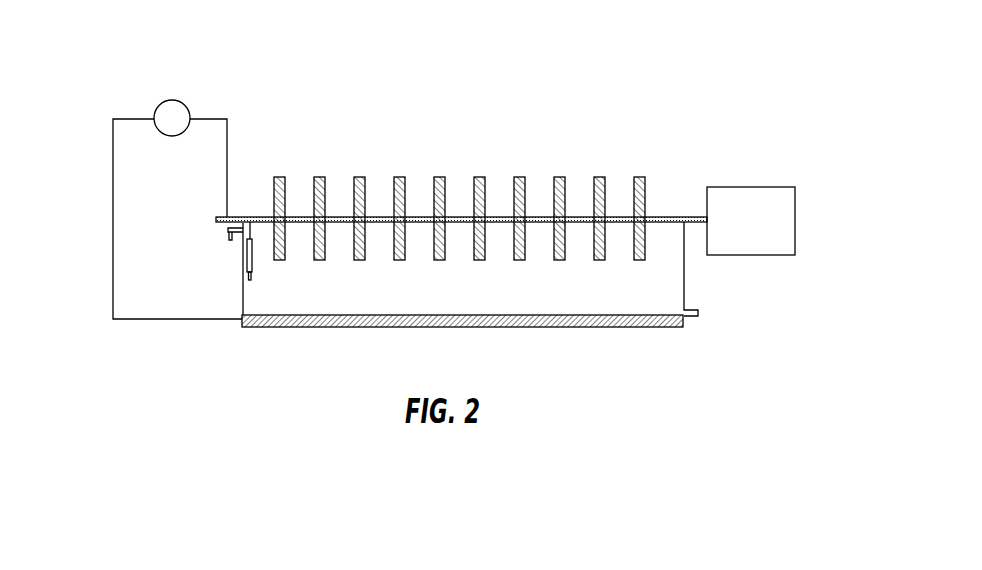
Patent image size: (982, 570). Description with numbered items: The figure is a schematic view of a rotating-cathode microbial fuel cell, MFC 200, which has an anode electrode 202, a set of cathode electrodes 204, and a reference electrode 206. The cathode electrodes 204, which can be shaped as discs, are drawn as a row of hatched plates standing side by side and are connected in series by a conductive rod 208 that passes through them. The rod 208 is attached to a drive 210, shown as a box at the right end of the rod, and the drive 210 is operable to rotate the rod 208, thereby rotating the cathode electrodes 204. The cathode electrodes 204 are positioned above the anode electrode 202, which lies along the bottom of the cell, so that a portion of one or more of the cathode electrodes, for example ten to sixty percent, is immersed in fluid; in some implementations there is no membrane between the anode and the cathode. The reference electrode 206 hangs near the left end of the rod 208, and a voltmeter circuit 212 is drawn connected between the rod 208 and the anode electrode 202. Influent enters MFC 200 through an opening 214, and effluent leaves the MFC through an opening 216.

The rotating-cathode microbial fuel cell 200 is at (150, 59).
The anode electrode 202 is at (310, 328).
The cathode electrodes 204 is at (278, 177).
The reference electrode 206 is at (254, 262).
The conductive rod 208 is at (663, 217).
The drive 210 is at (795, 221).
The voltmeter circuit 212 is at (177, 209).
The opening 214 is at (690, 317).
The opening 216 is at (231, 240).